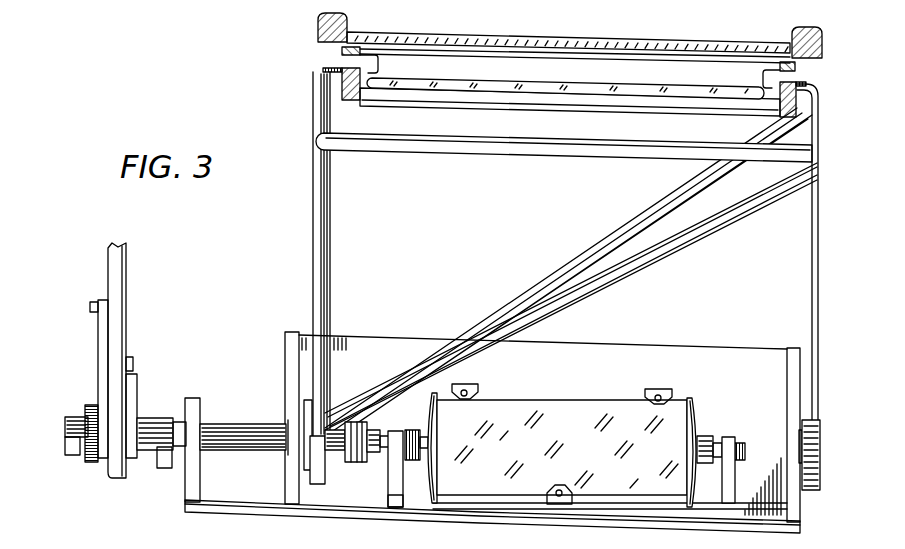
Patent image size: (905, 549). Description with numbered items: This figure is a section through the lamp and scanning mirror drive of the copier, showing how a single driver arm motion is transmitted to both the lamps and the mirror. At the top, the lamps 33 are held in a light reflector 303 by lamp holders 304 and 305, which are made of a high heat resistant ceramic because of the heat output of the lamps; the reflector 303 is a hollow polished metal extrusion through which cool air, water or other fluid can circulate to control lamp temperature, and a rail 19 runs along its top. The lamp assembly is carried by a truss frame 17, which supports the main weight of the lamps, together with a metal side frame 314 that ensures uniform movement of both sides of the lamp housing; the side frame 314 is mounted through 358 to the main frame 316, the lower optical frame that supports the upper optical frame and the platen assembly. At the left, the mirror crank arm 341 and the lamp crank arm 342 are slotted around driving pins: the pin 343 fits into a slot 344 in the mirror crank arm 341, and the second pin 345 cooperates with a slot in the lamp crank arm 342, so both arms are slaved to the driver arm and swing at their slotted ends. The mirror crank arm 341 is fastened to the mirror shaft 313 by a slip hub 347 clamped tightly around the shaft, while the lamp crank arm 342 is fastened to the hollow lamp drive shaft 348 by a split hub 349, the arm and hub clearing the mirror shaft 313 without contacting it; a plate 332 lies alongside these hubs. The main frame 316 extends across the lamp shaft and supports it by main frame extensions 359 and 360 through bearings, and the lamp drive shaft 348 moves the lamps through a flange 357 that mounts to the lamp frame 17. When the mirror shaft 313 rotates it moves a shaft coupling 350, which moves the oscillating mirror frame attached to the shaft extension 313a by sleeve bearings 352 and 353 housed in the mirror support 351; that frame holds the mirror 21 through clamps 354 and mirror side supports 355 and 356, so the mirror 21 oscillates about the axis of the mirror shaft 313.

The top frame rail 19 is at (558, 41).
The lamp holder 304 is at (343, 62).
The lamp holder 305 is at (796, 78).
The lamp 33 is at (482, 80).
The light reflector 303 is at (598, 108).
The truss frame 17 is at (330, 200).
The side frame 314 is at (817, 290).
The main frame extension 360 is at (285, 340).
The main frame extension 359 is at (199, 403).
The hollow lamp drive shaft 348 is at (220, 424).
The second pin 345 is at (133, 367).
The lamp crank arm 342 is at (142, 383).
The pin 343 is at (90, 312).
The mirror crank arm 341 is at (96, 355).
The slip hub 347 is at (72, 453).
The mounting plate 332 is at (114, 470).
The split hub 349 is at (164, 468).
The flange 357 is at (286, 469).
The lower optical frame 316 is at (263, 506).
The sleeve bearing 352 is at (396, 433).
The shaft coupling 350 is at (349, 452).
The mirror shaft 313 is at (328, 478).
The shaft extension 313a is at (414, 447).
The mirror support 351 is at (397, 508).
The mirror side support 355 is at (430, 504).
The clamp 354 is at (478, 392).
The mirror 21 is at (577, 410).
The sleeve bearing 353 is at (747, 457).
The mounting 358 is at (821, 462).
The mirror side support 356 is at (692, 512).
The slot 344 is at (549, 442).